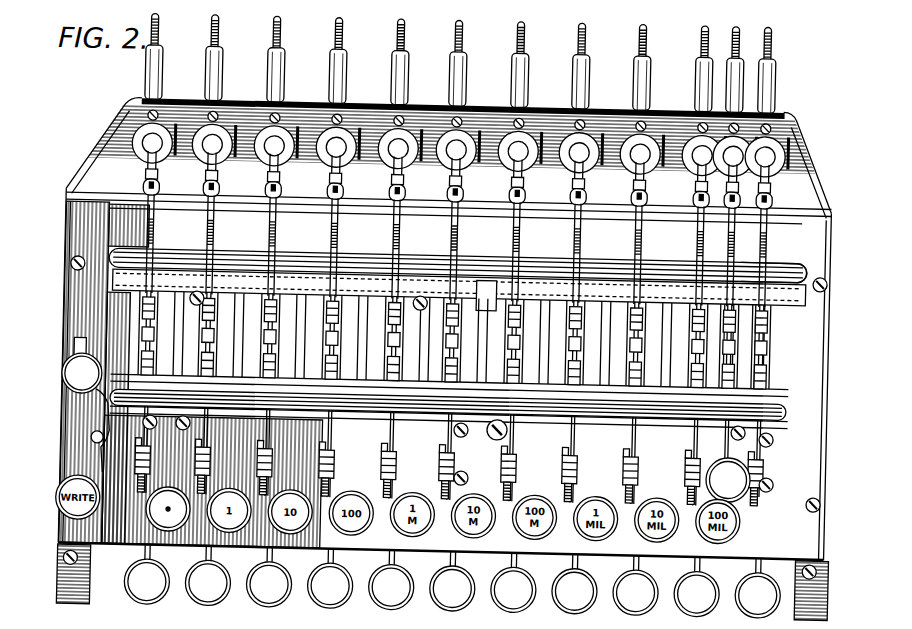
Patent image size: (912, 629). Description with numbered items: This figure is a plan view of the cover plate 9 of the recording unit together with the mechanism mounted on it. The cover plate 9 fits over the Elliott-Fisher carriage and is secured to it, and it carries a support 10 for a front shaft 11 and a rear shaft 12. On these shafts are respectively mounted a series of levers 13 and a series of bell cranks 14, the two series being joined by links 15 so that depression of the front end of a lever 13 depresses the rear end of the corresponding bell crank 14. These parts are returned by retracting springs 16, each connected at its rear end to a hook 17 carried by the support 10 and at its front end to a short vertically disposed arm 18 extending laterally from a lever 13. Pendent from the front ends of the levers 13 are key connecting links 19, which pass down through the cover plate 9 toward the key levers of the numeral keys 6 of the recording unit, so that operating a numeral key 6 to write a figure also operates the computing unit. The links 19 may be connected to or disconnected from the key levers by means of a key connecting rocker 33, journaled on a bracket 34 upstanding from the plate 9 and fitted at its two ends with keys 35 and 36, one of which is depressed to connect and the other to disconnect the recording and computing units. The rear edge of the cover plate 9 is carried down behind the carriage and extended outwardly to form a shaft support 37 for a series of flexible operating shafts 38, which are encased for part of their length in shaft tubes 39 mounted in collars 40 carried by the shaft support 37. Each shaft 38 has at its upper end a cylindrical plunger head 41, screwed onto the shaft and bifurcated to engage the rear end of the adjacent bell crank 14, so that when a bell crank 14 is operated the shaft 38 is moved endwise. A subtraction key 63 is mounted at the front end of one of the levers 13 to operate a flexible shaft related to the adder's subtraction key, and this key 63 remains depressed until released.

The numeral keys 6 is at (190, 606).
The cover plate 9 is at (96, 149).
The support 10 is at (787, 257).
The front shaft 11 is at (788, 399).
The rear shaft 12 is at (657, 275).
The levers 13 is at (400, 441).
The bell cranks 14 is at (214, 240).
The links 15 is at (279, 340).
The retracting springs 16 is at (215, 320).
The hooks 17 is at (398, 290).
The arms 18 is at (283, 398).
The key connecting links 19 is at (391, 485).
The key connecting rocker 33 is at (118, 552).
The bracket 34 is at (95, 450).
The key 35 is at (63, 430).
The key 36 is at (90, 358).
The shaft support 37 is at (246, 105).
The flexible operating shafts 38 is at (153, 31).
The shaft tubes 39 is at (324, 72).
The collars 40 is at (219, 172).
The plunger head 41 is at (157, 196).
The subtraction key 63 is at (762, 457).